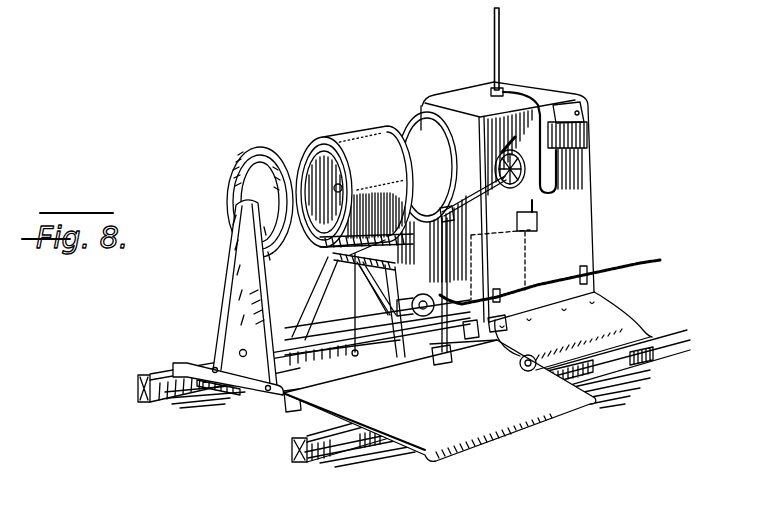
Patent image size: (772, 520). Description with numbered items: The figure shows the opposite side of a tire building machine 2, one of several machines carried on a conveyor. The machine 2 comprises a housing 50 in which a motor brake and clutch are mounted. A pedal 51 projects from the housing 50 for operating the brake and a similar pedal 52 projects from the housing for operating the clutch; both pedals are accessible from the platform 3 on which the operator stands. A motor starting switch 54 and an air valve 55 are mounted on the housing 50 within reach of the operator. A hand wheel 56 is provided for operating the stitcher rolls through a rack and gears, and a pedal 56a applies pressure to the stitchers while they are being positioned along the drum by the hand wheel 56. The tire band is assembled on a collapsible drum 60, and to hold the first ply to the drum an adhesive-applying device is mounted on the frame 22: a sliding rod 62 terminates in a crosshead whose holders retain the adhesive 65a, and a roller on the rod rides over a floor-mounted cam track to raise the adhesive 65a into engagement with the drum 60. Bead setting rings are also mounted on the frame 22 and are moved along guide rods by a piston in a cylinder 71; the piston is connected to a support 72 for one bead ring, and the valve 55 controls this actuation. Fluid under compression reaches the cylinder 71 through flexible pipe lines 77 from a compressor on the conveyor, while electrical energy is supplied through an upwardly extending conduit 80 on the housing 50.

The tire building machine 2 is at (537, 85).
The platform 3 is at (473, 443).
The frame 22 is at (286, 405).
The housing 50 is at (549, 101).
The pedal 51 is at (494, 335).
The pedal 52 is at (470, 342).
The motor starting switch 54 is at (588, 128).
The air valve 55 is at (539, 221).
The hand wheel 56 is at (497, 165).
The pedal 56a is at (441, 366).
The collapsible drum 60 is at (331, 140).
The sliding rod 62 is at (353, 301).
The adhesive 65a is at (324, 236).
The cylinder 71 is at (427, 295).
The support 72 is at (238, 272).
The flexible pipe lines 77 is at (622, 270).
The conduit 80 is at (497, 41).